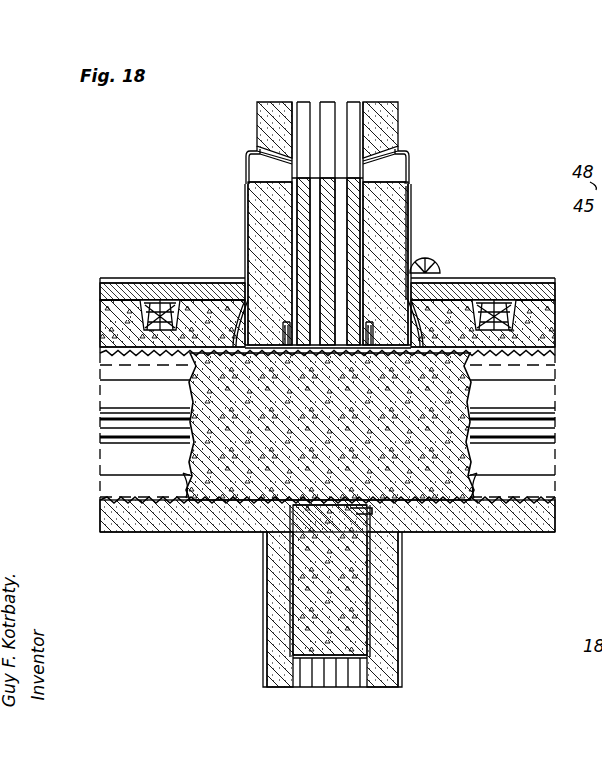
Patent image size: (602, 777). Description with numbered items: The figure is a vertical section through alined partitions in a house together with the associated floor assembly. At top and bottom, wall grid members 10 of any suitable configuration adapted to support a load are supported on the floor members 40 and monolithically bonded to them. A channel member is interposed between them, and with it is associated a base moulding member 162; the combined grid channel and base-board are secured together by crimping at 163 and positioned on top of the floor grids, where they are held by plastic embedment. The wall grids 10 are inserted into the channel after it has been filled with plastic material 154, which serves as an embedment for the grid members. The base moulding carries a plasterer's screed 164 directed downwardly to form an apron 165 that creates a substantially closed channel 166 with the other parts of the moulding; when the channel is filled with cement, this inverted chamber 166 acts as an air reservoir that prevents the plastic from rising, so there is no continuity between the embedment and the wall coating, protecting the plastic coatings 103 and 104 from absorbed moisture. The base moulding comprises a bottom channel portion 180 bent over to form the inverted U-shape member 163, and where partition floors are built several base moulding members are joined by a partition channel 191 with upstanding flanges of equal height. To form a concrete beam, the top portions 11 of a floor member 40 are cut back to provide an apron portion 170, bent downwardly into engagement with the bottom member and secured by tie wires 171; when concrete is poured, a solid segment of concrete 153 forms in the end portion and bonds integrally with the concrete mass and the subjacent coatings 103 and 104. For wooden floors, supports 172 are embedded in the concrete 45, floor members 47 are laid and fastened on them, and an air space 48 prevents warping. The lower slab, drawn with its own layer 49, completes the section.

The wall grid member 10 is at (329, 108).
The top portion 11 is at (262, 512).
The floor member 40 is at (163, 467).
The concrete 45 is at (100, 317).
The floor member 47 is at (116, 280).
The air space 48 is at (100, 282).
The ceiling slab 49 is at (196, 533).
The plastic coating 103 is at (276, 103).
The plastic coating 104 is at (257, 107).
The solid segment of concrete 153 is at (300, 573).
The plastic material 154 is at (410, 213).
The base moulding member 162 is at (246, 233).
The crimping 163 is at (247, 258).
The plasterer's screed 164 is at (256, 158).
The apron 165 is at (250, 193).
The closed channel 166 is at (258, 172).
The apron portion 170 is at (190, 404).
The tie wire 171 is at (183, 477).
The support 172 is at (161, 300).
The bottom channel portion 180 is at (242, 282).
The partition channel 191 is at (424, 263).